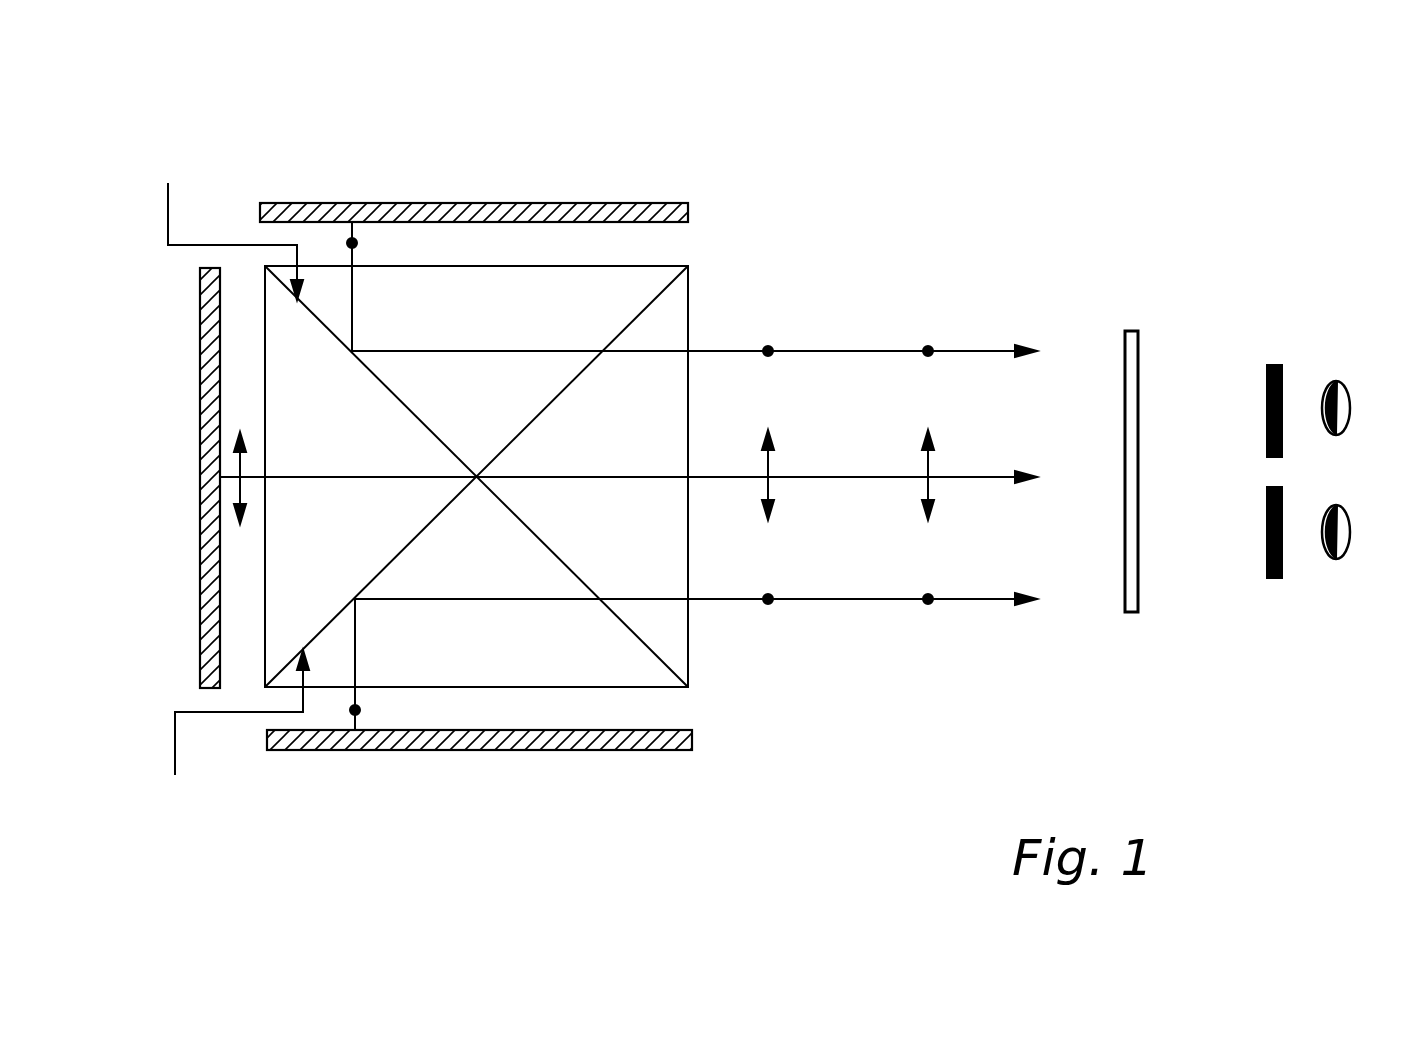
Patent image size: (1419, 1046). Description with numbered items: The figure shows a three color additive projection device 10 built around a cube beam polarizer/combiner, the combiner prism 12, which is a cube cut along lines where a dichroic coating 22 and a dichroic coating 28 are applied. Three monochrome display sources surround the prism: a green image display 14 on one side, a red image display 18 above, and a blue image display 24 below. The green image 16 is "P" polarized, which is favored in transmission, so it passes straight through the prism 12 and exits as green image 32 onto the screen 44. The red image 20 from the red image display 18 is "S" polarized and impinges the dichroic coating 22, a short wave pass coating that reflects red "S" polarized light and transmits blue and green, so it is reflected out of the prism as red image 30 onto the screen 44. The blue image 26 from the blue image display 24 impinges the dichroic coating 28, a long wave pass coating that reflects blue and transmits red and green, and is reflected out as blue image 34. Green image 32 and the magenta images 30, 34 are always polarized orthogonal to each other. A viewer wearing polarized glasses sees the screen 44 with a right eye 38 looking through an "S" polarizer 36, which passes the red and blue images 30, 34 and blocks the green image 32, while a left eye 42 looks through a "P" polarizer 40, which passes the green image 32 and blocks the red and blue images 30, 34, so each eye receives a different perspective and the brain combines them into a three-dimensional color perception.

The device 10 is at (922, 133).
The combiner prism 12 is at (351, 535).
The green image display 14 is at (218, 353).
The green image 16 is at (318, 470).
The red image display 18 is at (645, 201).
The red image 20 is at (352, 330).
The dichroic coating 22 is at (425, 422).
The blue image display 24 is at (673, 749).
The blue image 26 is at (355, 668).
The dichroic coating 28 is at (415, 540).
The red image 30 is at (830, 351).
The green image 32 is at (830, 477).
The blue image 34 is at (830, 599).
The "S" polarizer 36 is at (1282, 388).
The right eye 38 is at (1350, 395).
The "P" polarizer 40 is at (1282, 510).
The left eye 42 is at (1350, 520).
The screen 44 is at (1138, 366).